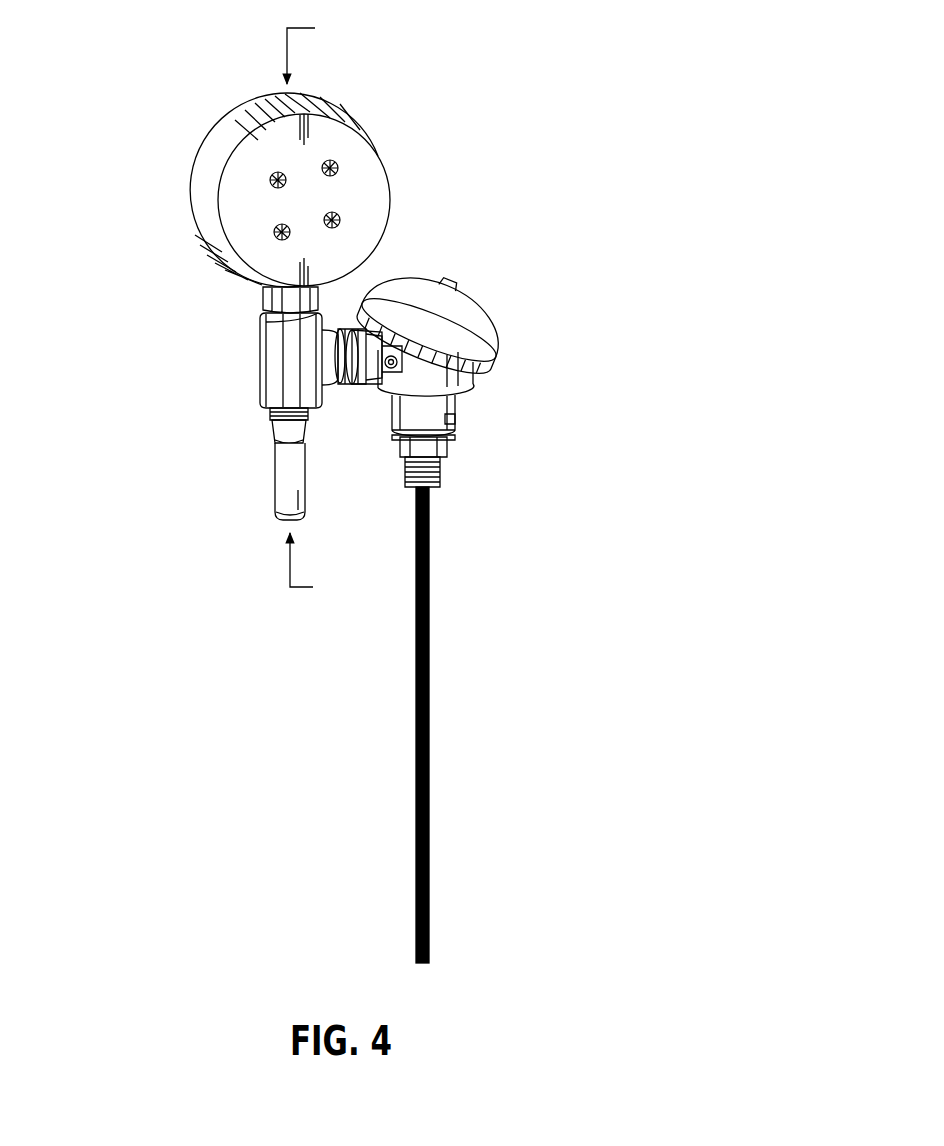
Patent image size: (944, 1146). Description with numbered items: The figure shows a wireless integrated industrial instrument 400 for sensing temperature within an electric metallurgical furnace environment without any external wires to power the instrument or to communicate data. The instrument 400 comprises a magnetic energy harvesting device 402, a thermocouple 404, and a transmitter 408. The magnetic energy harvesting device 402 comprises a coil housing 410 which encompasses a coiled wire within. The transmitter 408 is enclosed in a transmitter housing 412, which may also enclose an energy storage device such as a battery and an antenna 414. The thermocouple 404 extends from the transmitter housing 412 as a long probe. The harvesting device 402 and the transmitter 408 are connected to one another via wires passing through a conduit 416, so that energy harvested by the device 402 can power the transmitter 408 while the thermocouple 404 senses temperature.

The wireless integrated industrial instrument 400 is at (523, 66).
The magnetic energy harvesting device 402 is at (214, 106).
The thermocouple 404 is at (421, 827).
The transmitter 408 is at (507, 339).
The coil housing 410 is at (215, 150).
The transmitter housing 412 is at (448, 313).
The antenna 414 is at (249, 456).
The conduit 416 is at (272, 343).